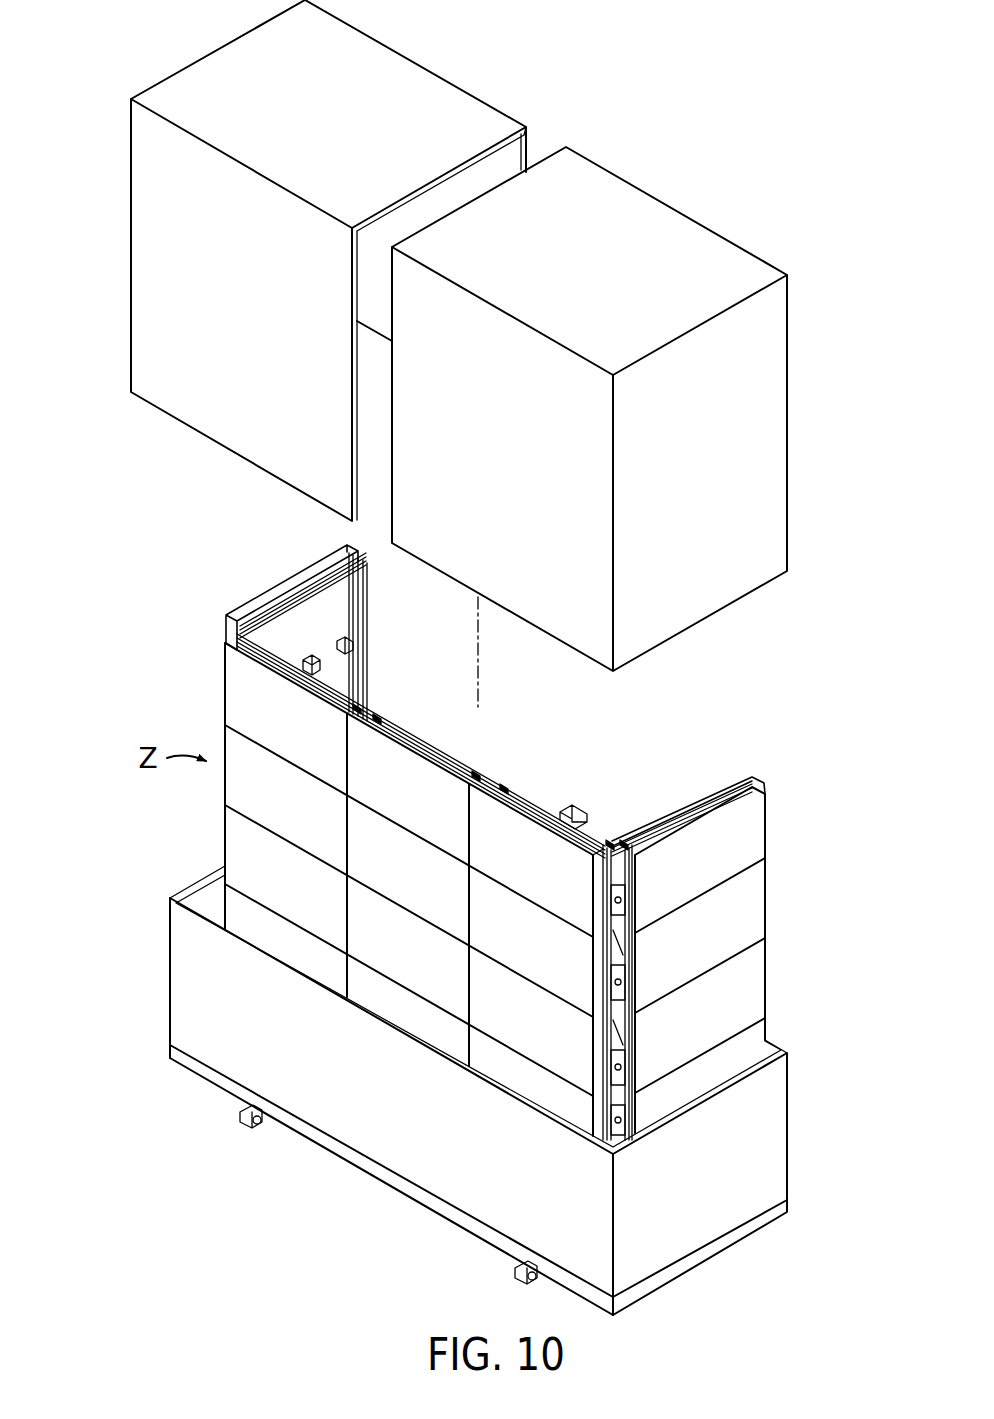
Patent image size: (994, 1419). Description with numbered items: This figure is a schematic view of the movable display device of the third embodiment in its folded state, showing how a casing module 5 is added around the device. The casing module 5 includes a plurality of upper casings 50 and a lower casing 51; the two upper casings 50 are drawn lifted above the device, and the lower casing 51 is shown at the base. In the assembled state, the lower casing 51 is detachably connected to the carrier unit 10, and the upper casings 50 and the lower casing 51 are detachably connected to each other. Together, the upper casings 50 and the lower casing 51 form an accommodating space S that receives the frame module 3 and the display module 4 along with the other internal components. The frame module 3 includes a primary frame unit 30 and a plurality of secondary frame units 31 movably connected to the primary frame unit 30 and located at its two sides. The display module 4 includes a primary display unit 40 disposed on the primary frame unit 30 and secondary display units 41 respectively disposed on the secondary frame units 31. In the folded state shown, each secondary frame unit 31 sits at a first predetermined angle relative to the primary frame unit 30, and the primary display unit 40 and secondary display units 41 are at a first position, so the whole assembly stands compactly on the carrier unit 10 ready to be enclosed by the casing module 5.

The casing module 5 is at (864, 521).
The upper casing 50 is at (129, 243).
The lower casing 51 is at (792, 1102).
The carrier unit 10 is at (207, 1076).
The display module 4 is at (143, 585).
The primary display unit 40 is at (225, 679).
The secondary display unit 41 is at (246, 598).
The frame module 3 is at (420, 610).
The primary frame unit 30 is at (332, 676).
The secondary frame unit 31 is at (340, 611).
The accommodating space S is at (580, 729).